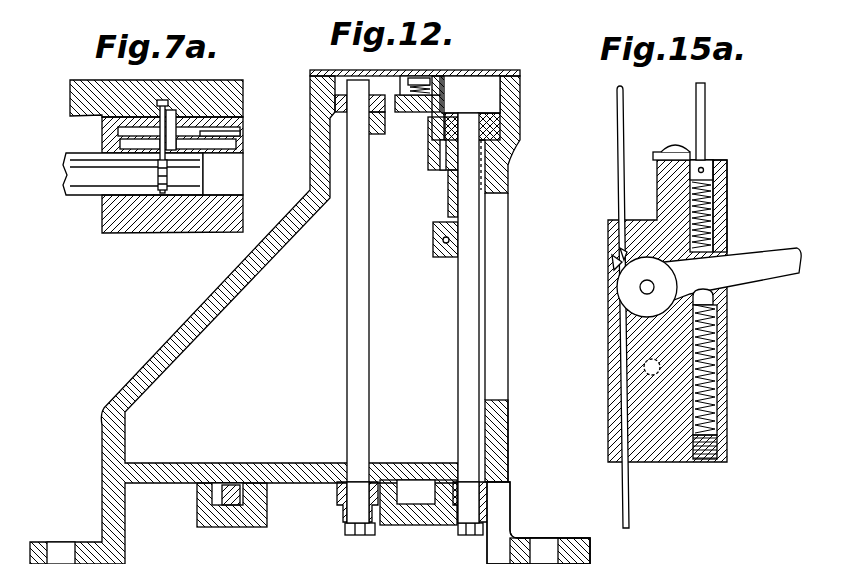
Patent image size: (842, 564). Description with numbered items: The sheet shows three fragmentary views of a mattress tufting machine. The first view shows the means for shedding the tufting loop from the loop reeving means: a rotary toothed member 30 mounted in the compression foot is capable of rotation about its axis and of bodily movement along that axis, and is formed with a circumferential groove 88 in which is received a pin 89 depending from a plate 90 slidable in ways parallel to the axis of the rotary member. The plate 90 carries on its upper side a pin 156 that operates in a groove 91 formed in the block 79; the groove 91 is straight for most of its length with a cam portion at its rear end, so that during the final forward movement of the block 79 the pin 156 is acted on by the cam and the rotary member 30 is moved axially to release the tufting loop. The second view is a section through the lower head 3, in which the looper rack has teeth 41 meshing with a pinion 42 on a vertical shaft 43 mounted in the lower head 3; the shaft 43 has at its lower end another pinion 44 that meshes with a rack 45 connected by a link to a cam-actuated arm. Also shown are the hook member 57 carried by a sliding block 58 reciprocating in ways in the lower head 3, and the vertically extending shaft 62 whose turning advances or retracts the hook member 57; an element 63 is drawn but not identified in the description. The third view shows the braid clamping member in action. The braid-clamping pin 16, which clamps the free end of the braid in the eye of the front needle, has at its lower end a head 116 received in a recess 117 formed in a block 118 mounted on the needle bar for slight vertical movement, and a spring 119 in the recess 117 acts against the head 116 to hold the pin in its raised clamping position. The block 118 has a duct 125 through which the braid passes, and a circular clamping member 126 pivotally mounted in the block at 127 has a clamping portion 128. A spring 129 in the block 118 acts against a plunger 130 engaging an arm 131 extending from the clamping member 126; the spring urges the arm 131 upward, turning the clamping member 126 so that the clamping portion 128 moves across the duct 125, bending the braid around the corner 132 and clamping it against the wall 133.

In FIG. 7A, the block 79 is at (102, 90).
In FIG. 7A, the groove 91 is at (163, 100).
In FIG. 7A, the pin 156 is at (168, 107).
In FIG. 7A, the plate 90 is at (203, 134).
In FIG. 7A, the pin 89 is at (168, 152).
In FIG. 7A, the rotary toothed member 30 is at (102, 181).
In FIG. 7A, the circumferential groove 88 is at (162, 195).
In FIG. 12, the lower head 3 is at (225, 289).
In FIG. 12, the beam 63 is at (335, 100).
In FIG. 12, the sliding block 58 is at (410, 80).
In FIG. 12, the hook member 57 is at (412, 80).
In FIG. 12, the pinion 42 is at (500, 110).
In FIG. 12, the teeth 41 is at (492, 122).
In FIG. 12, the shaft 62 is at (355, 298).
In FIG. 12, the vertical shaft 43 is at (473, 357).
In FIG. 12, the pinion 44 is at (493, 495).
In FIG. 12, the rack 45 is at (445, 515).
In FIG. 15A, the braid-clamping pin 16 is at (706, 127).
In FIG. 15A, the head 116 is at (715, 166).
In FIG. 15A, the recess 117 is at (712, 200).
In FIG. 15A, the spring 119 is at (712, 232).
In FIG. 15A, the block 118 is at (617, 222).
In FIG. 15A, the circular clamping member 126 is at (618, 250).
In FIG. 15A, the corner 132 is at (620, 256).
In FIG. 15A, the wall 133 is at (616, 263).
In FIG. 15A, the clamping portion 128 is at (633, 277).
In FIG. 15A, the pivot 127 is at (644, 290).
In FIG. 15A, the arm 131 is at (766, 260).
In FIG. 15A, the plunger 130 is at (718, 300).
In FIG. 15A, the spring 129 is at (720, 346).
In FIG. 15A, the duct 125 is at (618, 382).